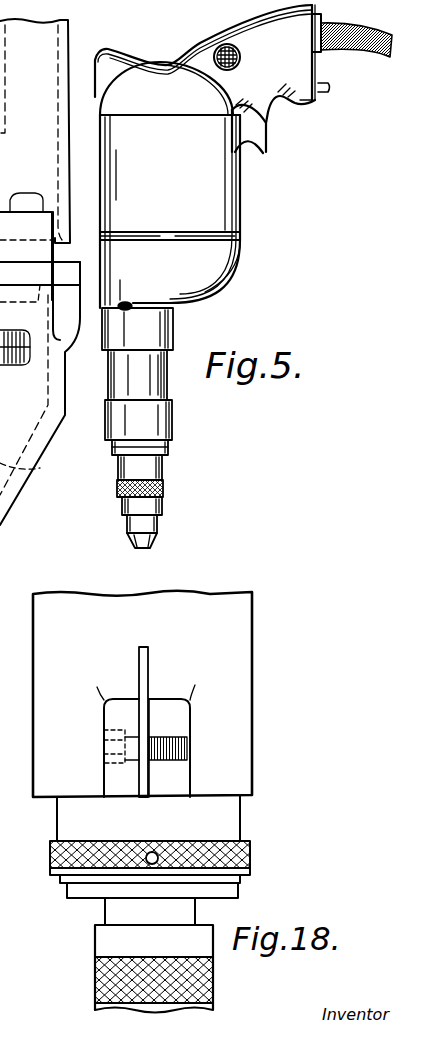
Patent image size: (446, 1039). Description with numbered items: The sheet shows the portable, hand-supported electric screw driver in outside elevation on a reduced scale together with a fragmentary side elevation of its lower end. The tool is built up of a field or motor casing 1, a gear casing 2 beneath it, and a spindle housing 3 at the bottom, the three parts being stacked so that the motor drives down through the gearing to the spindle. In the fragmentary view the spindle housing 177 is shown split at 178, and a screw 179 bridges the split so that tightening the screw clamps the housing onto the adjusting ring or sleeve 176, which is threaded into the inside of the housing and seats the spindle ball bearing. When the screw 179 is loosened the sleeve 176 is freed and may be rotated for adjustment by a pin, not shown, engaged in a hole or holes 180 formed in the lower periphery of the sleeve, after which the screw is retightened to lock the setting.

In FIG. 5, the field or motor casing 1 is at (205, 193).
In FIG. 5, the gear casing 2 is at (240, 258).
In FIG. 5, the spindle housing 3 is at (150, 330).
In FIG. 18, the adjusting ring or sleeve 176 is at (243, 810).
In FIG. 18, the spindle housing 177 is at (252, 752).
In FIG. 18, the split 178 is at (148, 668).
In FIG. 18, the screw 179 is at (102, 738).
In FIG. 18, the hole or holes 180 is at (155, 853).